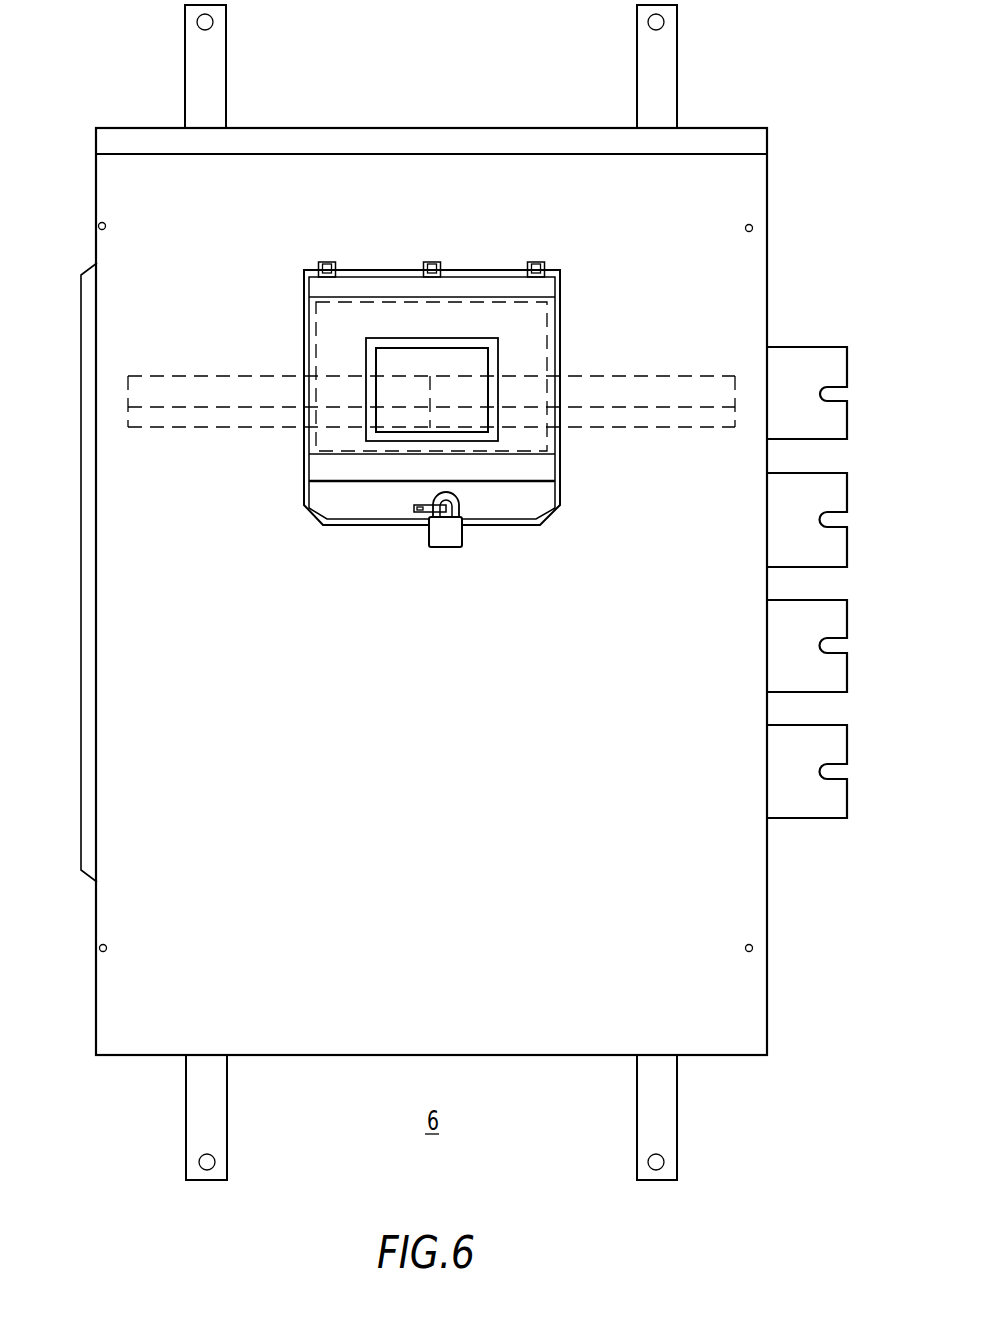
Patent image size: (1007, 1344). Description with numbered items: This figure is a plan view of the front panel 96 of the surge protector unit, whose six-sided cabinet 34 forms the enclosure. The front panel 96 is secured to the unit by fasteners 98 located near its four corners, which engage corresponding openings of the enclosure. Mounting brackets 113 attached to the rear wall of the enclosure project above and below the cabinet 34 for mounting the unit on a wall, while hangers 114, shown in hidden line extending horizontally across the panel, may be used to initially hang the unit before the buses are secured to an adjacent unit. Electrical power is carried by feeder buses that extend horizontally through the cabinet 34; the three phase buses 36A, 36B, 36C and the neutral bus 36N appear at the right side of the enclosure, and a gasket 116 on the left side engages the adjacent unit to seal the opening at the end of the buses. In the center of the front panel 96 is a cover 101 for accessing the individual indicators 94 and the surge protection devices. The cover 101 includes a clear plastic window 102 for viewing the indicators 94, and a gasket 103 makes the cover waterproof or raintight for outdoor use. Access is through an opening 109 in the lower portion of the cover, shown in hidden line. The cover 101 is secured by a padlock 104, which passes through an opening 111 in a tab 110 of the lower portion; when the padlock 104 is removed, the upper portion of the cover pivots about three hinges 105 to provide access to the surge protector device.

The cabinet 34 is at (768, 179).
The front panel 96 is at (436, 168).
The mounting brackets 113 is at (215, 69).
The fasteners 98 is at (106, 226).
The gasket 116 is at (88, 345).
The neutral bus 36N is at (830, 426).
The phase bus 36A is at (830, 551).
The phase bus 36B is at (830, 668).
The phase bus 36C is at (830, 795).
The hangers 114 is at (243, 418).
The cover 101 is at (440, 398).
The gasket 103 is at (562, 490).
The opening 109 is at (548, 360).
The indicators 94 is at (424, 348).
The window 102 is at (482, 338).
The hinges 105 is at (327, 262).
The tab 110 is at (412, 507).
The opening 111 is at (407, 515).
The padlock 104 is at (463, 540).